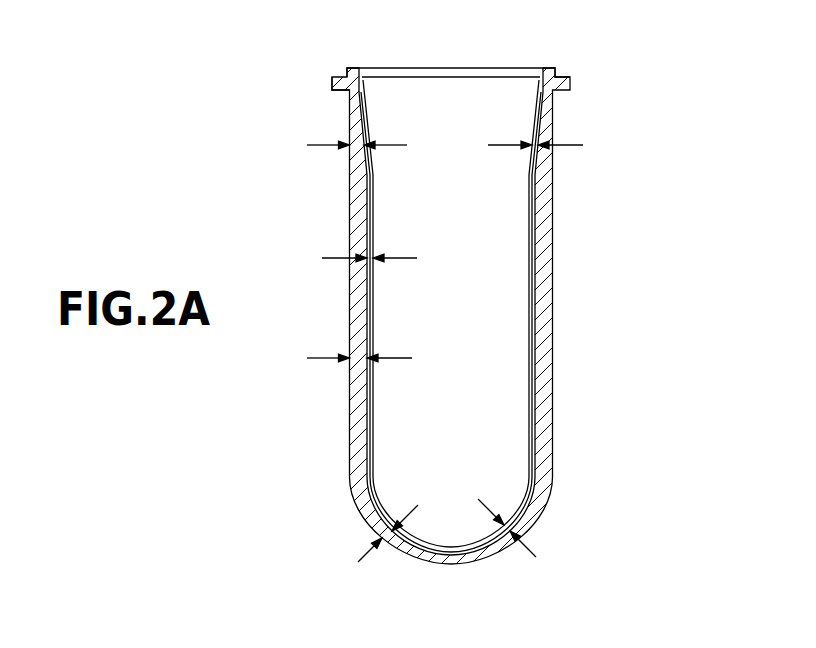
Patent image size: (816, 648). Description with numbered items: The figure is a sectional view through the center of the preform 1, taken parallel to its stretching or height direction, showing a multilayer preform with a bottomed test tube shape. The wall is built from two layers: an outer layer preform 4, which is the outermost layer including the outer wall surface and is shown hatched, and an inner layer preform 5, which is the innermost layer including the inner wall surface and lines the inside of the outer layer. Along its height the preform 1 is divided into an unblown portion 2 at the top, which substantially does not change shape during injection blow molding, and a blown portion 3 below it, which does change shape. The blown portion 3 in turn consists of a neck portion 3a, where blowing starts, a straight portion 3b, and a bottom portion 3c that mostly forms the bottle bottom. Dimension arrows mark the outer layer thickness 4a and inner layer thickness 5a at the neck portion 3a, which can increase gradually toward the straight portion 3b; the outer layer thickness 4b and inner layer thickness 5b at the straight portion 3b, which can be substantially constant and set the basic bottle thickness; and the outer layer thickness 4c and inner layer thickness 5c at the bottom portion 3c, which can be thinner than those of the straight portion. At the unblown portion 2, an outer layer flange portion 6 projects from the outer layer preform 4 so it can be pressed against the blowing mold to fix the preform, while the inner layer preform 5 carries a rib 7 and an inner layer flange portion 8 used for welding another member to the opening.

The preform 1 is at (608, 62).
The unblown portion 2 is at (644, 68).
The blown portion 3 is at (707, 132).
The neck portion 3a is at (644, 132).
The straight portion 3b is at (647, 182).
The bottom portion 3c is at (647, 487).
The outer layer preform 4 is at (548, 492).
The outer layer thickness 4a is at (320, 143).
The outer layer thickness 4b is at (320, 356).
The outer layer thickness 4c is at (362, 558).
The inner layer preform 5 is at (536, 357).
The inner layer thickness 5a is at (505, 147).
The inner layer thickness 5b is at (335, 256).
The inner layer thickness 5c is at (537, 556).
The outer layer flange portion 6 is at (332, 83).
The rib 7 is at (548, 68).
The inner layer flange portion 8 is at (344, 68).